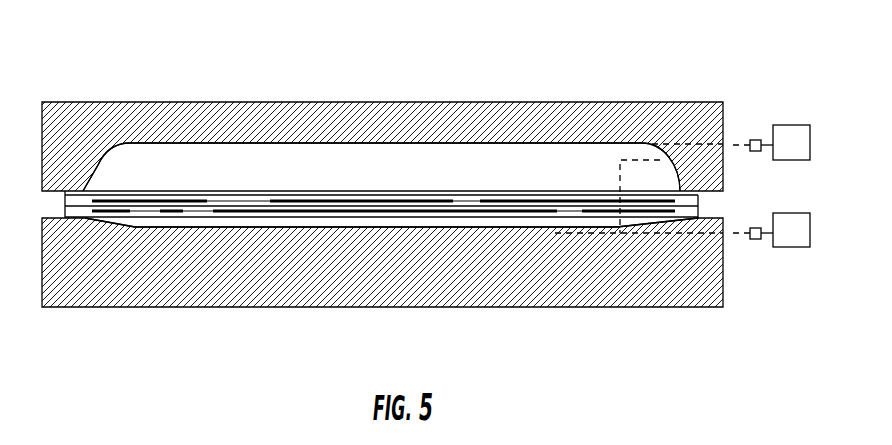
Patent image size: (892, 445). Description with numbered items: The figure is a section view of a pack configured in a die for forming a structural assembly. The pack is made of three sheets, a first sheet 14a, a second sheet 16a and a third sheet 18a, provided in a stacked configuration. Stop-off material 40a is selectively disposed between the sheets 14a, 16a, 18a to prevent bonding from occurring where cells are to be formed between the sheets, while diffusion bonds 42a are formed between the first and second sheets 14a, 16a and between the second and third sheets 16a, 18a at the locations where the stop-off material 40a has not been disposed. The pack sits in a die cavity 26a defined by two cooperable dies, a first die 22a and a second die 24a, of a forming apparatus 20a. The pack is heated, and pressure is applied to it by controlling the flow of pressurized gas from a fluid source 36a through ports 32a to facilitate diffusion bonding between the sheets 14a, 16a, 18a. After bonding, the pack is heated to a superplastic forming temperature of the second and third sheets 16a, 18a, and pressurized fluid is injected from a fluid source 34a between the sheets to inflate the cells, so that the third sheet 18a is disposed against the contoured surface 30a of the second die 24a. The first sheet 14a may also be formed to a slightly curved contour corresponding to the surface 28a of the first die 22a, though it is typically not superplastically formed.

The first sheet 14a is at (650, 216).
The second sheet 16a is at (608, 206).
The third sheet 18a is at (572, 195).
The forming apparatus 20a is at (449, 76).
The first die 22a is at (512, 307).
The second die 24a is at (525, 112).
The die cavity 26a is at (311, 168).
The surface 28a is at (280, 228).
The contoured surface 30a is at (228, 143).
The ports 32a is at (756, 151).
The fluid source 34a is at (785, 230).
The fluid source 36a is at (785, 142).
The stop-off material 40a is at (355, 201).
The diffusion bonds 42a is at (232, 200).